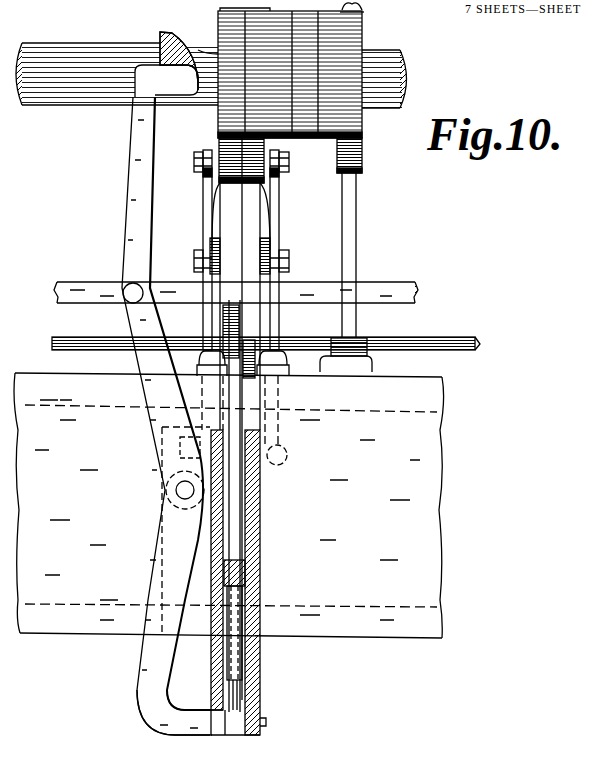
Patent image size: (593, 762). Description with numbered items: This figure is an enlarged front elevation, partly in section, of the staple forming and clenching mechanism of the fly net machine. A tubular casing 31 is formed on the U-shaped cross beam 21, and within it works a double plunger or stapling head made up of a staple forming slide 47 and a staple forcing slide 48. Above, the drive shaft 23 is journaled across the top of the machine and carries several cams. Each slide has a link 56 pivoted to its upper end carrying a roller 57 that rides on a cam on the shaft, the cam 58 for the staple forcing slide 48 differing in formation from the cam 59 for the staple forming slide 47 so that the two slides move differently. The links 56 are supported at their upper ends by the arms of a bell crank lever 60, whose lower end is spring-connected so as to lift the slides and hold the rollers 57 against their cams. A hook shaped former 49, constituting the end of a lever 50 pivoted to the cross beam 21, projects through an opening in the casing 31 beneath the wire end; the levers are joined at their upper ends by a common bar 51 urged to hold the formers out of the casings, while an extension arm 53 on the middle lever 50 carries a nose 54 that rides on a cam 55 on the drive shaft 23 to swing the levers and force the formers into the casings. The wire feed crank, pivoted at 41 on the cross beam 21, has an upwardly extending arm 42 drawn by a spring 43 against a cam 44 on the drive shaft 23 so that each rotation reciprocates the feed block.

The cross beam 21 is at (229, 505).
The drive shaft 23 is at (73, 97).
The tubular casing 31 is at (256, 552).
The pivot 41 is at (432, 343).
The upwardly extending arm 42 is at (350, 10).
The spring 43 is at (362, 8).
The cam 44 is at (384, 105).
The staple forming slide 47 is at (243, 483).
The staple forcing slide 48 is at (235, 523).
The hook shaped former 49 is at (166, 705).
The lever 50 is at (160, 404).
The common bar 51 is at (86, 290).
The extension arm 53 is at (127, 200).
The nose 54 is at (170, 80).
The cam 55 is at (181, 34).
The link 56 is at (223, 225).
The roller 57 is at (220, 175).
The cam 58 is at (204, 32).
The cam 59 is at (268, 14).
The bell crank lever 60 is at (213, 207).